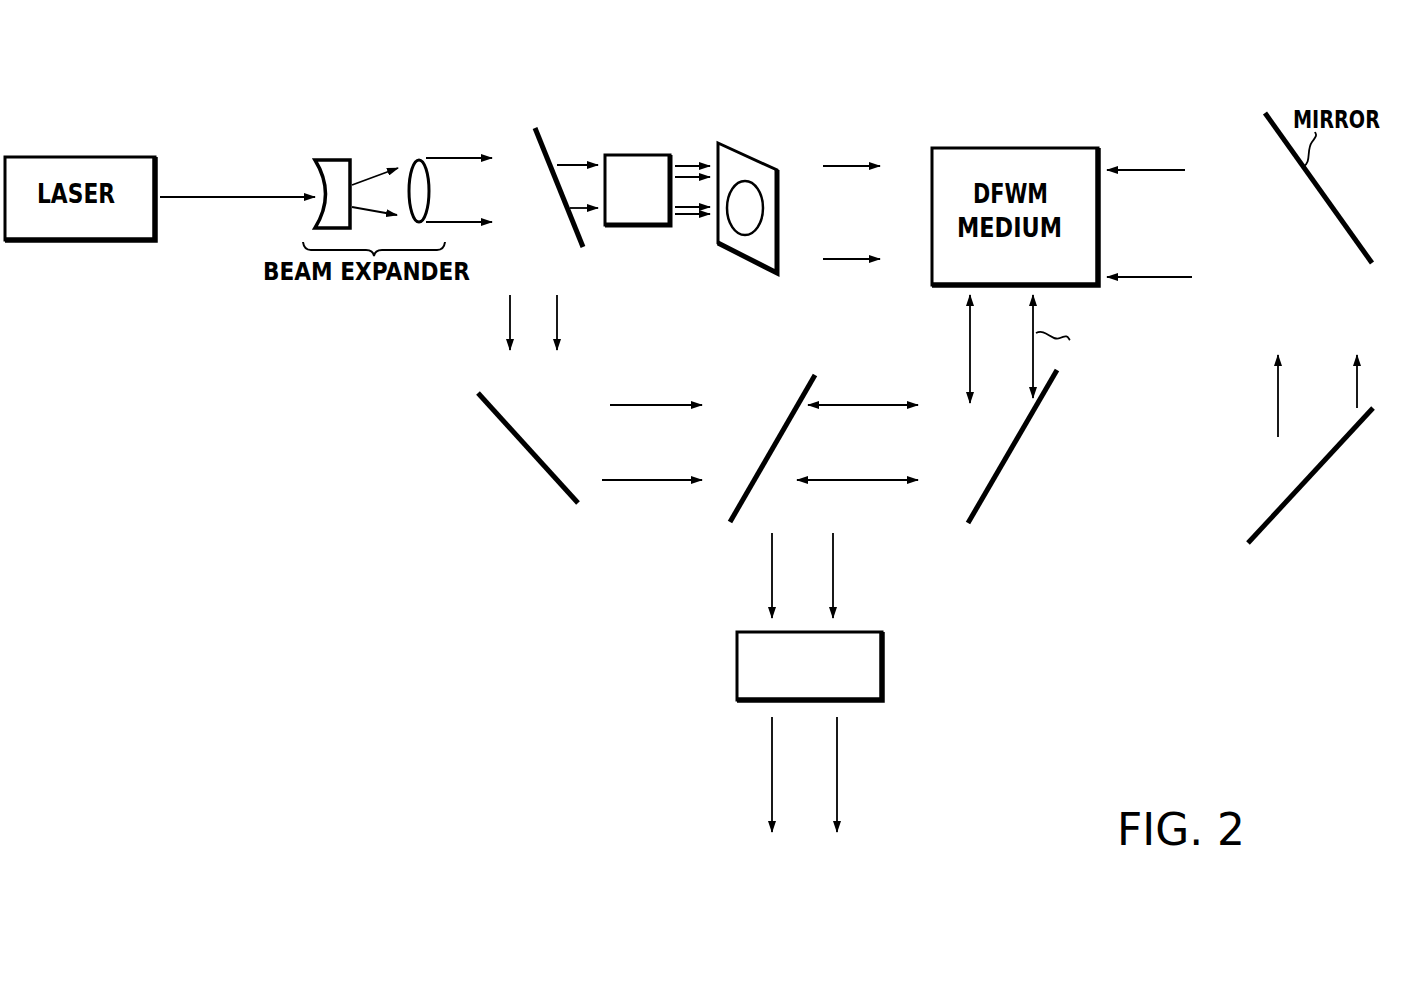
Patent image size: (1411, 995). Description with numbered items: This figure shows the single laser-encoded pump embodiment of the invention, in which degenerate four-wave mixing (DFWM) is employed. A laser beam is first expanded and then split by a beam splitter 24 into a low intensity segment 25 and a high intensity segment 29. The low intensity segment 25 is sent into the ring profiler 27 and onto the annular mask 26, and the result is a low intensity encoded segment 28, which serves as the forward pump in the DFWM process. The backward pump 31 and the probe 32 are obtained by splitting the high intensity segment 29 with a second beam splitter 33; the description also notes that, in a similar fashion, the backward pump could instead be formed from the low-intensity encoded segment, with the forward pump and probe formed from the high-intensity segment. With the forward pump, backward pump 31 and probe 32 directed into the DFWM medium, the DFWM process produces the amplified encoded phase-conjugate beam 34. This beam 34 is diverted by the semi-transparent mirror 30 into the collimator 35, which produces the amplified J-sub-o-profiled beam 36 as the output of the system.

The beam splitter 24 is at (562, 99).
The low intensity segment 25 is at (578, 210).
The annular mask 26 is at (747, 267).
The ring profiler 27 is at (662, 155).
The low intensity encoded segment 28 is at (845, 262).
The high intensity segment 29 is at (652, 482).
The semi-transparent mirror 30 is at (745, 510).
The backward pump 31 is at (1158, 172).
The probe 32 is at (965, 357).
The beam splitter 33 is at (970, 521).
The amplified encoded pc beam 34 is at (865, 580).
The collimator 35 is at (884, 672).
The amplified J_o-profiled beam 36 is at (887, 774).